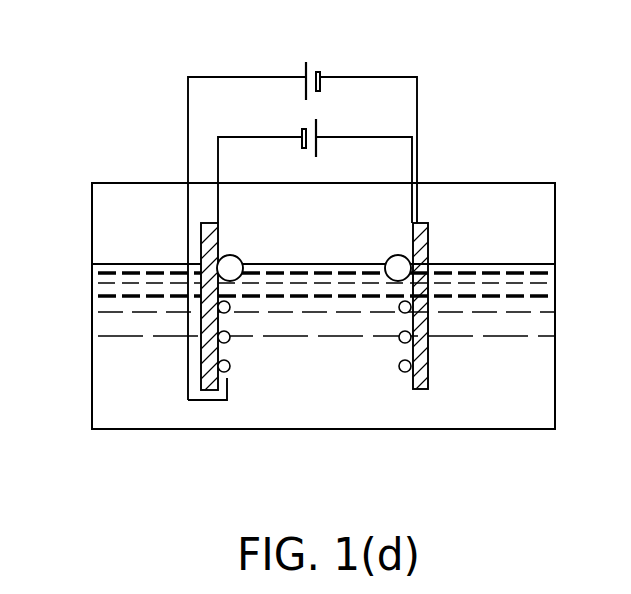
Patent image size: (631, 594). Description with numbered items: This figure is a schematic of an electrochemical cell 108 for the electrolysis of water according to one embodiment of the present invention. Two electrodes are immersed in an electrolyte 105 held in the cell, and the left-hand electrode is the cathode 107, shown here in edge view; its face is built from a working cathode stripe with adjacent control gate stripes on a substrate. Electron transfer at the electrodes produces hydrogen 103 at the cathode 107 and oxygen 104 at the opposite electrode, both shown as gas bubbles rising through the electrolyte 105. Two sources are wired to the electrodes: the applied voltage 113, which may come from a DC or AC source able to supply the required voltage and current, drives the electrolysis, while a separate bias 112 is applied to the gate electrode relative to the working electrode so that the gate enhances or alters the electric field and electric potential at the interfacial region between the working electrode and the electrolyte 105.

The electrochemical cell 108 is at (112, 102).
The electrolyte 105 is at (553, 335).
The cathode 107 is at (210, 378).
The hydrogen 103 is at (237, 279).
The oxygen 104 is at (393, 280).
The gate bias 112 is at (323, 75).
The applied voltage 113 is at (318, 125).